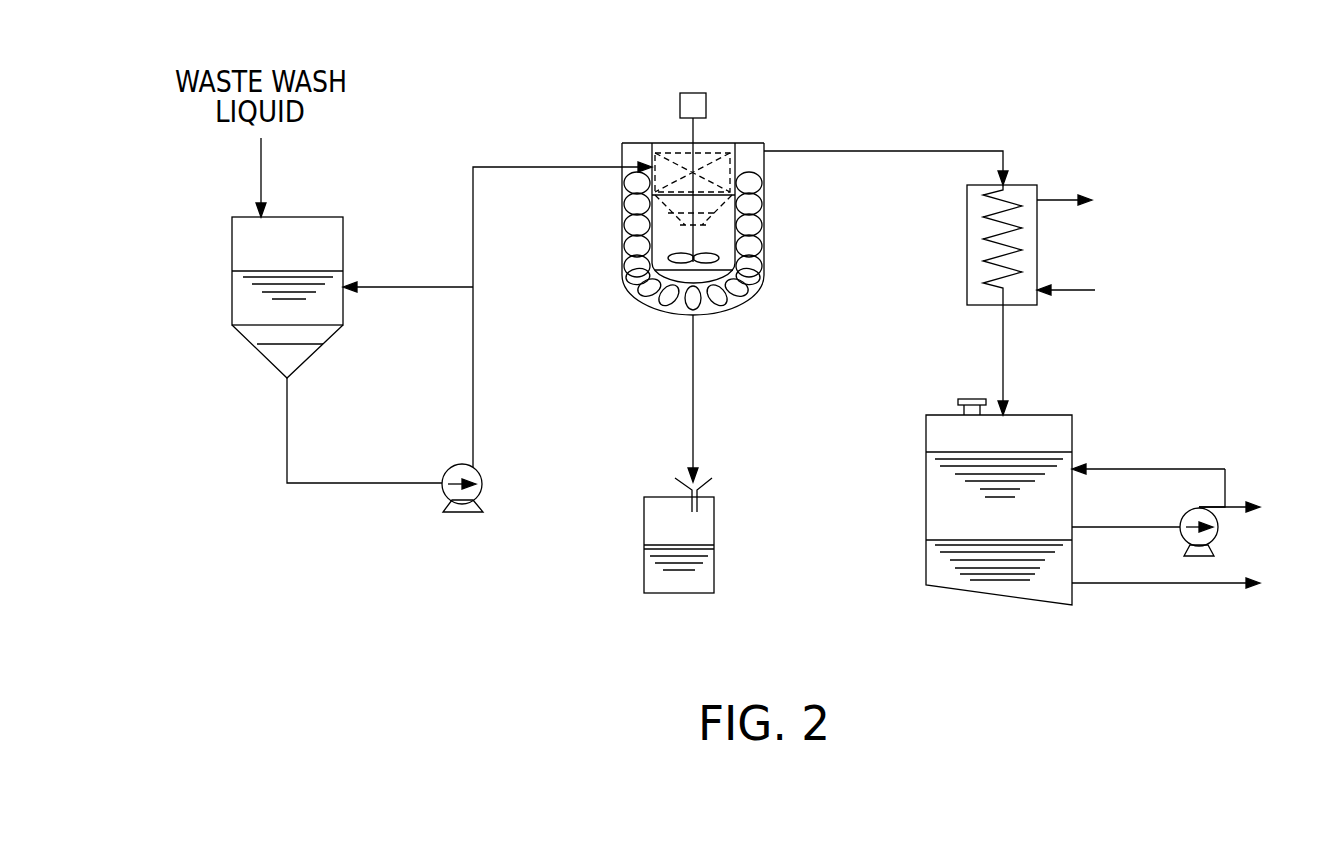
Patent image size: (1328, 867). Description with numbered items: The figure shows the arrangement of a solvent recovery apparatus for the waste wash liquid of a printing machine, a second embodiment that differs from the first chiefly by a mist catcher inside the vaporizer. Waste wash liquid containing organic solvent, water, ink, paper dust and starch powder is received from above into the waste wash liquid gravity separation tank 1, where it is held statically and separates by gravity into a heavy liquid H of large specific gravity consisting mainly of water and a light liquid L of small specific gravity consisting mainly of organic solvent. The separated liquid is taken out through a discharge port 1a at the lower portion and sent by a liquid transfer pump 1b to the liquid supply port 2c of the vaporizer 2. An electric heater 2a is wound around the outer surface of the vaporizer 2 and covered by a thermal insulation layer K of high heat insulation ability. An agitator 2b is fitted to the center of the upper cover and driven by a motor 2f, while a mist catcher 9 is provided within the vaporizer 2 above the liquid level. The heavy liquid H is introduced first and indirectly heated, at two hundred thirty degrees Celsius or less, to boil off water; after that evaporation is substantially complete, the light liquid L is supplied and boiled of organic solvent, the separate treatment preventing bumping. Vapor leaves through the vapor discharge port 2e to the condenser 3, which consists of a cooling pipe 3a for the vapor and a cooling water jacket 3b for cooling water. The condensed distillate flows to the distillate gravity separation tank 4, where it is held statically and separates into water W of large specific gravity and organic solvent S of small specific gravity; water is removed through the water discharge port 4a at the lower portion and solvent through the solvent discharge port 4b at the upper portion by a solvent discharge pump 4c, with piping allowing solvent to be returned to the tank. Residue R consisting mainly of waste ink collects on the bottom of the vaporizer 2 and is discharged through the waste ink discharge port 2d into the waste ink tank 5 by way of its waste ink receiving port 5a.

The waste wash liquid gravity separation tank 1 is at (232, 247).
The discharge port 1a is at (287, 378).
The liquid transfer pump 1b is at (482, 484).
The vaporizer 2 is at (773, 269).
The electric heater 2a is at (632, 285).
The agitator 2b is at (707, 273).
The liquid supply port 2c is at (648, 162).
The waste ink discharge port 2d is at (704, 310).
The vapor discharge port 2e is at (742, 150).
The motor 2f is at (706, 100).
The mist catcher 9 is at (683, 155).
The condenser 3 is at (1003, 249).
The cooling pipe 3a is at (1020, 255).
The cooling water jacket 3b is at (967, 243).
The distillate gravity separation tank 4 is at (1073, 490).
The water discharge port 4a is at (1076, 583).
The solvent discharge port 4b is at (1076, 527).
The solvent discharge pump 4c is at (1218, 527).
The waste ink tank 5 is at (714, 520).
The waste ink receiving port 5a is at (713, 483).
The thermal insulation layer K is at (765, 205).
The light liquid L is at (243, 310).
The heavy liquid H is at (300, 351).
The residue R is at (708, 277).
The organic solvent S is at (935, 500).
The water W is at (935, 572).